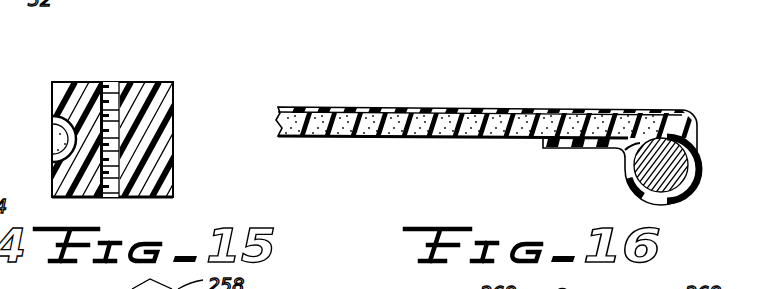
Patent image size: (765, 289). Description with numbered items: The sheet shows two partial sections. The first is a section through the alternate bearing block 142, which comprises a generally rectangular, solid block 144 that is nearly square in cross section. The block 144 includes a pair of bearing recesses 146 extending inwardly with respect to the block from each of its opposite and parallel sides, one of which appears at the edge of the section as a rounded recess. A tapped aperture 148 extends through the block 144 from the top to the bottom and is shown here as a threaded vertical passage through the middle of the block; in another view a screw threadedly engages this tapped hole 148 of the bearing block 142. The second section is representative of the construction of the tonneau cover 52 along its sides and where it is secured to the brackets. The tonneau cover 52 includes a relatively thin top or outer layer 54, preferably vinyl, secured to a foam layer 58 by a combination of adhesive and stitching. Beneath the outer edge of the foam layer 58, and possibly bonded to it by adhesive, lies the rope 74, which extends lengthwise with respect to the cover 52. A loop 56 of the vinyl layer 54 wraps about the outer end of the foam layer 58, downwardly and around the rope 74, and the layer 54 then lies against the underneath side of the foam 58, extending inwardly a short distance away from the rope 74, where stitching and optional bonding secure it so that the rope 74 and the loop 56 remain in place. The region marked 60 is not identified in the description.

In FIG. 15, the alternate bearing block 142 is at (134, 114).
In FIG. 15, the solid block 144 is at (52, 176).
In FIG. 15, the bearing recesses 146 is at (52, 128).
In FIG. 15, the tapped aperture 148 is at (108, 82).
In FIG. 16, the tonneau cover 52 is at (499, 136).
In FIG. 16, the outer layer 54 is at (528, 108).
In FIG. 16, the loop 56 is at (688, 193).
In FIG. 16, the foam layer 58 is at (452, 134).
In FIG. 16, the recessed portion 60 is at (618, 110).
In FIG. 16, the rope 74 is at (637, 162).